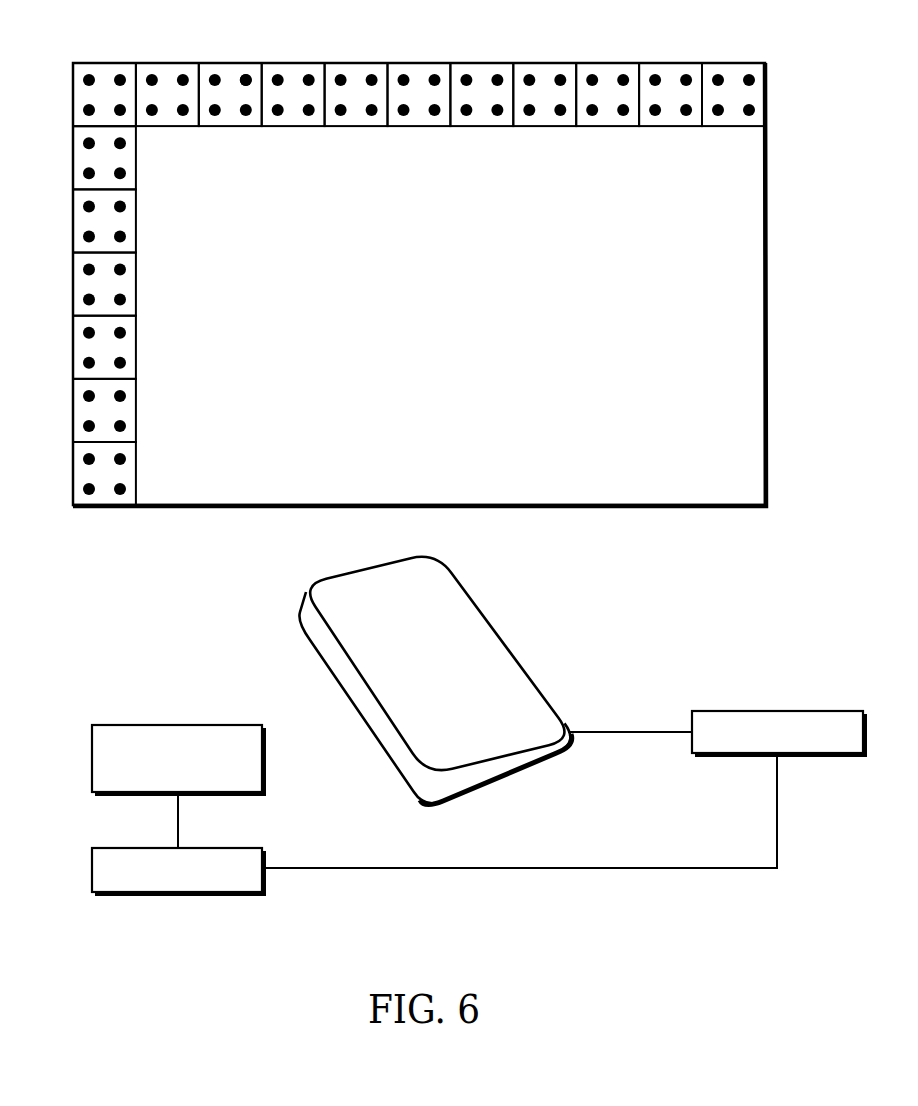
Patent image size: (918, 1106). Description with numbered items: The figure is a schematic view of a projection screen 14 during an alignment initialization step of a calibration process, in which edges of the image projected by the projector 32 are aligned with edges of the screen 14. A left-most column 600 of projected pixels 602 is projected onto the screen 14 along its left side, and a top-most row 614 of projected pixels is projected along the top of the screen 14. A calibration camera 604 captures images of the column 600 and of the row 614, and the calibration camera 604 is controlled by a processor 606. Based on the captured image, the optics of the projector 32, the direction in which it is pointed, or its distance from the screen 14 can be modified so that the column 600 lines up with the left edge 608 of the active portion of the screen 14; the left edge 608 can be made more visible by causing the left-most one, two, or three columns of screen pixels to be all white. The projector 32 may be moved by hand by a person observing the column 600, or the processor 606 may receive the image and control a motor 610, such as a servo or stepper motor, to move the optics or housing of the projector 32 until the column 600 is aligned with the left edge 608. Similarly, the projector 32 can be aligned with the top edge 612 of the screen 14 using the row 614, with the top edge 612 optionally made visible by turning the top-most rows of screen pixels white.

The left-most column 600 is at (426, 253).
The projected pixels 602 is at (246, 73).
The top edge 612 is at (606, 62).
The screen 14 is at (733, 62).
The left edge 608 is at (73, 158).
The top-most row 614 is at (783, 99).
The projector 32 is at (512, 650).
The calibration camera 604 is at (92, 758).
The processor 606 is at (92, 868).
The motor 610 is at (777, 711).